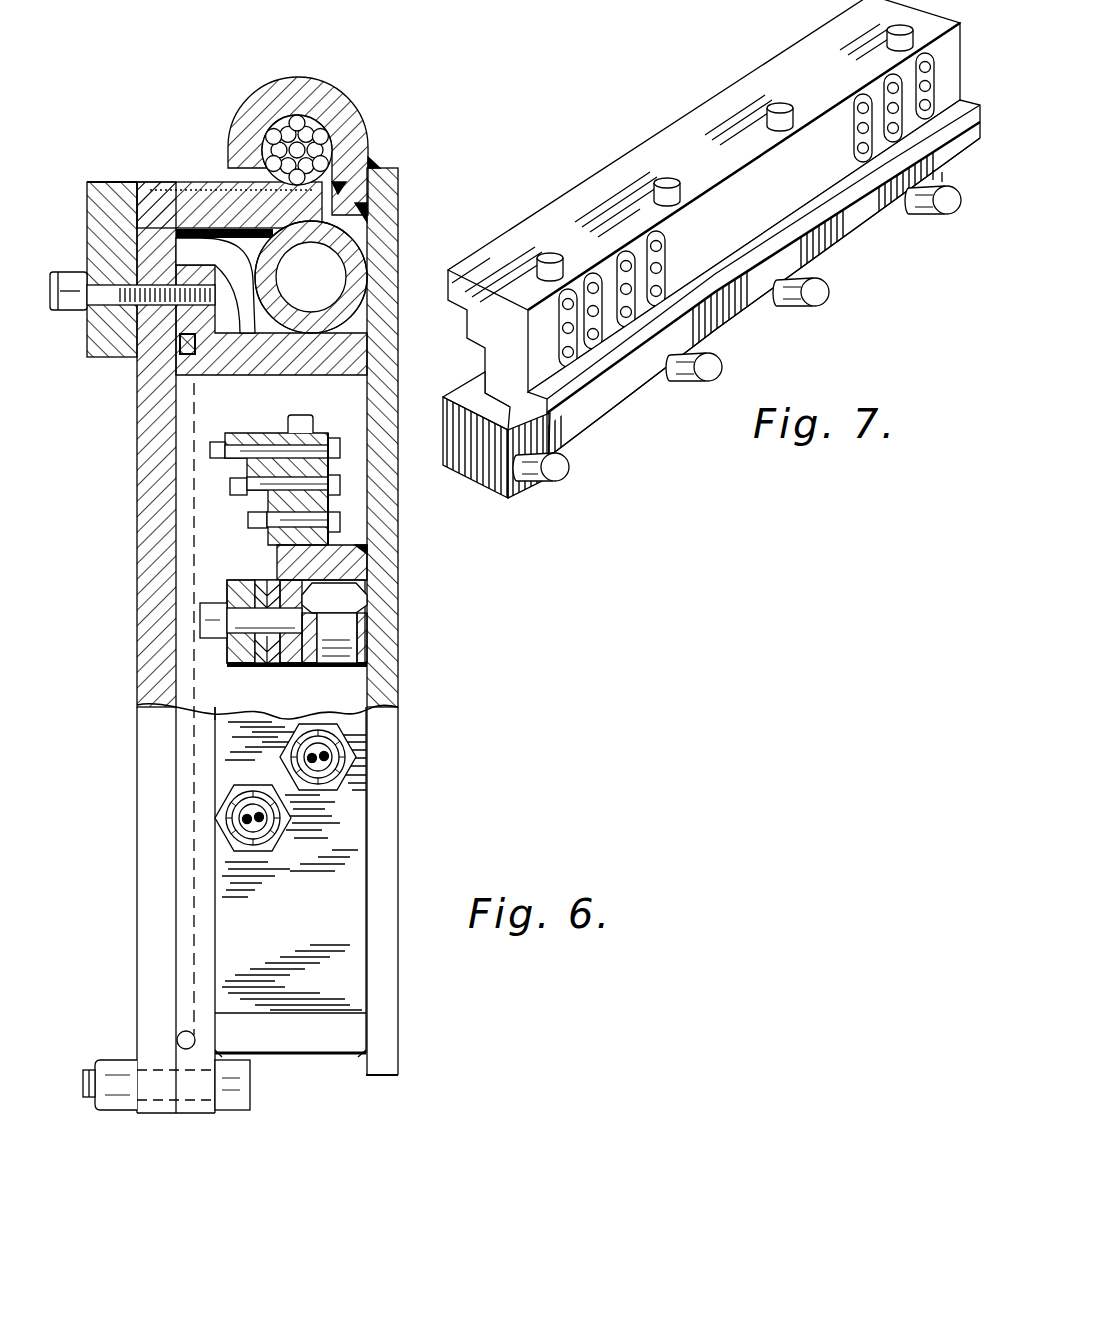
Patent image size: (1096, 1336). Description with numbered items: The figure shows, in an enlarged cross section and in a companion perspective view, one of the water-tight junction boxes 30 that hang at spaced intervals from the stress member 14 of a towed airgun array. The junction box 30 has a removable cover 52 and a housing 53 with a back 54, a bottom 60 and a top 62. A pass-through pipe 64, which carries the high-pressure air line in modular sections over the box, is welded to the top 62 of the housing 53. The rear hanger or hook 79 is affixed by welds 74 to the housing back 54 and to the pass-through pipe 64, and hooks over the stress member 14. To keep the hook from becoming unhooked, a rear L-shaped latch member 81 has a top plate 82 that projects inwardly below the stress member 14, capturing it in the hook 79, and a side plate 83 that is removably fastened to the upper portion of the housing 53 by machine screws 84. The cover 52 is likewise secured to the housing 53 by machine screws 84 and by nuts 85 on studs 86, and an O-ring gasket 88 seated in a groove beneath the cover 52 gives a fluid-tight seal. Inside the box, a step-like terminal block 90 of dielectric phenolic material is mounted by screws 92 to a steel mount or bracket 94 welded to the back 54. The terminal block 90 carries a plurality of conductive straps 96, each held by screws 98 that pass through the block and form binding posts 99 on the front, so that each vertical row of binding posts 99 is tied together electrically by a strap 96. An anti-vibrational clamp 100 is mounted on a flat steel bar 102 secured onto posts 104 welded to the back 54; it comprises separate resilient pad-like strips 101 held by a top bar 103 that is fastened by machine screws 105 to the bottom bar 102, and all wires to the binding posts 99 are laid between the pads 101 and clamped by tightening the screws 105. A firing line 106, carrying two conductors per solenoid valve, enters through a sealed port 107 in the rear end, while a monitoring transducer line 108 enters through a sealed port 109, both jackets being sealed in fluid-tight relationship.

In FIG. 6, the stress member 14 is at (335, 115).
In FIG. 6, the junction box 30 is at (428, 666).
In FIG. 6, the removable cover 52 is at (145, 655).
In FIG. 6, the housing 53 is at (312, 908).
In FIG. 6, the back 54 is at (398, 787).
In FIG. 6, the bottom 60 is at (325, 1045).
In FIG. 6, the top 62 is at (183, 242).
In FIG. 6, the pass-through pipe 64 is at (350, 267).
In FIG. 6, the welds 74 is at (375, 235).
In FIG. 6, the rear hanger or hook 79 is at (278, 80).
In FIG. 6, the rear L-shaped latch member 81 is at (107, 160).
In FIG. 6, the top plate 82 is at (200, 190).
In FIG. 6, the side plate 83 is at (90, 228).
In FIG. 6, the machine screws 84 is at (73, 315).
In FIG. 6, the nuts 85 is at (123, 1107).
In FIG. 6, the studs 86 is at (78, 1093).
In FIG. 6, the O-ring gasket 88 is at (160, 393).
In FIG. 6, the terminal block 90 is at (249, 425).
In FIG. 7, the terminal block 90 is at (636, 128).
In FIG. 6, the screws 92 is at (300, 415).
In FIG. 7, the screws 92 is at (668, 176).
In FIG. 6, the steel mount or bracket 94 is at (355, 567).
In FIG. 7, the steel mount or bracket 94 is at (637, 367).
In FIG. 6, the conductive straps 96 is at (333, 440).
In FIG. 7, the conductive straps 96 is at (925, 100).
In FIG. 6, the screws 98 is at (340, 522).
In FIG. 7, the screws 98 is at (672, 268).
In FIG. 6, the binding posts 99 is at (250, 522).
In FIG. 6, the anti-vibrational clamp 100 is at (249, 678).
In FIG. 7, the anti-vibrational clamp 100 is at (470, 500).
In FIG. 6, the pad-like strips 101 is at (268, 660).
In FIG. 6, the flat steel bar 102 is at (303, 662).
In FIG. 7, the flat steel bar 102 is at (860, 237).
In FIG. 6, the top bar 103 is at (240, 660).
In FIG. 6, the posts 104 is at (342, 655).
In FIG. 7, the posts 104 is at (562, 480).
In FIG. 6, the machine screws 105 is at (205, 603).
In FIG. 6, the firing line 106 is at (317, 778).
In FIG. 6, the port 107 is at (342, 785).
In FIG. 6, the monitoring transducer line 108 is at (262, 847).
In FIG. 6, the port 109 is at (233, 788).